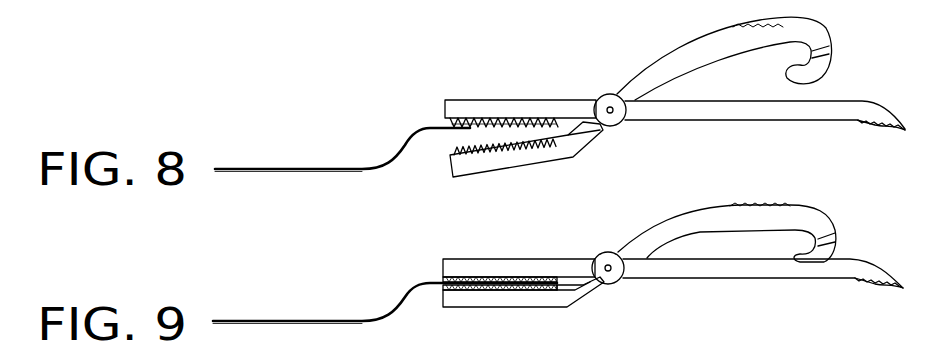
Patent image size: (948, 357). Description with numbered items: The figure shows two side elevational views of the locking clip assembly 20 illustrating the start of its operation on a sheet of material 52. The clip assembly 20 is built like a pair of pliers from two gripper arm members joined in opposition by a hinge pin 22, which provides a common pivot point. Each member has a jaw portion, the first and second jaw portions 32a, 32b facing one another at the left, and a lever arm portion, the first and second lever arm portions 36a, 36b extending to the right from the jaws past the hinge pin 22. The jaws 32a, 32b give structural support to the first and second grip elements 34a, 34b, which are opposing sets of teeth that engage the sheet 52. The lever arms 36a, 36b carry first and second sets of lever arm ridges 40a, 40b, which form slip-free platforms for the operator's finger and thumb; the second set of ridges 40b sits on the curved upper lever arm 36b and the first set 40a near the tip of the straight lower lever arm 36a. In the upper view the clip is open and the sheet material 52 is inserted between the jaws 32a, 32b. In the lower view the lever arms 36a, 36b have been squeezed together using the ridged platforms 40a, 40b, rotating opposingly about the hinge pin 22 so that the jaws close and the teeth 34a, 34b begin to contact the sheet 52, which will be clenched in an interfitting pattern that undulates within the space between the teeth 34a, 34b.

In FIG. 8, the clip assembly 20 is at (622, 55).
In FIG. 9, the hinge pin 22 is at (610, 271).
In FIG. 8, the first jaw portion 32a is at (498, 108).
In FIG. 9, the first jaw portion 32a is at (462, 268).
In FIG. 8, the second jaw portion 32b is at (490, 163).
In FIG. 9, the second jaw portion 32b is at (456, 303).
In FIG. 9, the first grip element 34a is at (508, 279).
In FIG. 9, the second grip element 34b is at (488, 291).
In FIG. 9, the first lever arm portion 36a is at (717, 277).
In FIG. 9, the second lever arm portion 36b is at (684, 231).
In FIG. 9, the first set of lever arm ridges 40a is at (880, 283).
In FIG. 9, the second set of lever arm ridges 40b is at (757, 205).
In FIG. 8, the sheet of material 52 is at (298, 169).
In FIG. 9, the sheet of material 52 is at (292, 320).